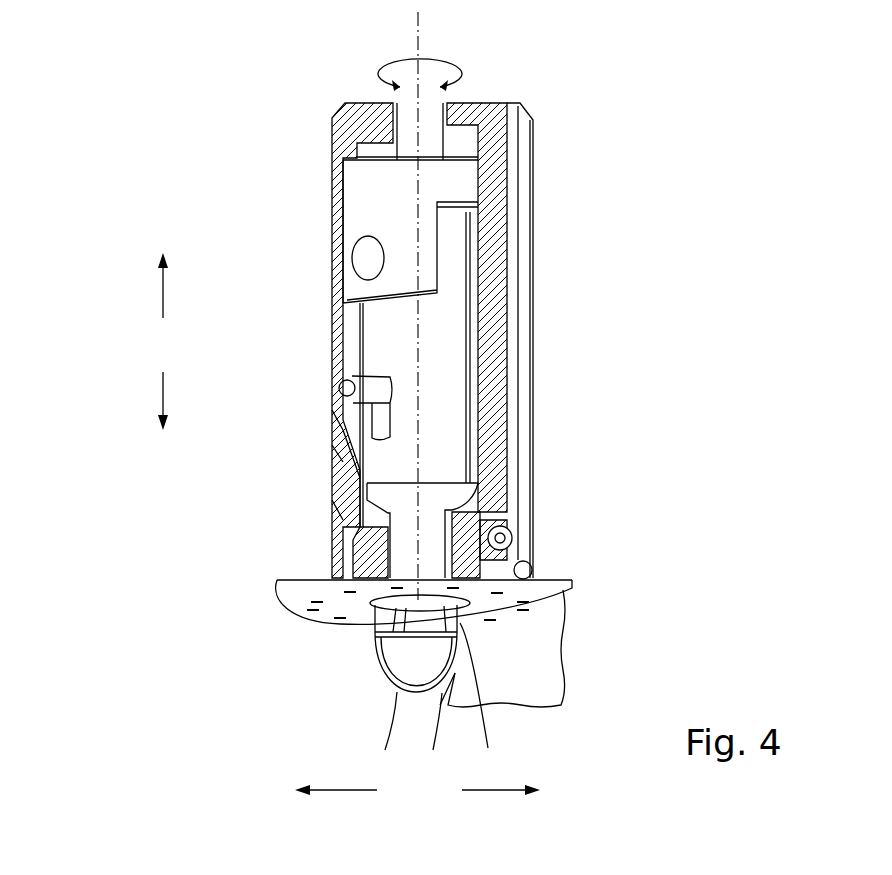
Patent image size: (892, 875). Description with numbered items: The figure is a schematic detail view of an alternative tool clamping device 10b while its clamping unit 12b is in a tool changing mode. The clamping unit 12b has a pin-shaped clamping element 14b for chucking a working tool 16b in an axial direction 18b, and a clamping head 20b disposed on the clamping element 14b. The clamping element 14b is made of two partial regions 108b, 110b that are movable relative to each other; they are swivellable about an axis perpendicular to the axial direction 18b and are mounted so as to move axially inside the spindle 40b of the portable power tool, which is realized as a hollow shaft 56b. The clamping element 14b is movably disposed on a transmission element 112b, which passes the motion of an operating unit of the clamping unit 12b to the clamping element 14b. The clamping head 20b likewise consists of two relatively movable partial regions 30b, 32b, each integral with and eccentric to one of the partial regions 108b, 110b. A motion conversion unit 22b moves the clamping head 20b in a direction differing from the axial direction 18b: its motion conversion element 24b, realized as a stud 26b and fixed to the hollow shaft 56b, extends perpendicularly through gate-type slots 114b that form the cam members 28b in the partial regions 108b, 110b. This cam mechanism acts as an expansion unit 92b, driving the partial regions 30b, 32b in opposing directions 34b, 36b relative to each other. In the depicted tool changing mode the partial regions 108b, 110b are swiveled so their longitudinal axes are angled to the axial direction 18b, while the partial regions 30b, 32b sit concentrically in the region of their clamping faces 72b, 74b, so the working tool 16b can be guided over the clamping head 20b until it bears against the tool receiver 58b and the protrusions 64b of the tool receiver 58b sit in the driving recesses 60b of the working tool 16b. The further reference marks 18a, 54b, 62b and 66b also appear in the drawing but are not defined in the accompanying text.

The tool clamping device 10b is at (605, 62).
The clamping unit 12b is at (238, 633).
The clamping element 14b is at (380, 339).
The working tool 16b is at (578, 584).
The first axial direction 18a is at (163, 293).
The axial direction 18b is at (163, 393).
The clamping head 20b is at (357, 712).
The motion conversion unit 22b is at (305, 452).
The motion conversion element 24b is at (509, 406).
The stud 26b is at (392, 378).
The cam member 28b is at (332, 463).
The partial region of clamping head 30b is at (410, 670).
The partial region of clamping head 32b is at (437, 727).
The opposing direction 34b is at (347, 792).
The opposing direction 36b is at (490, 792).
The spindle 40b is at (497, 190).
The longitudinal axis 54b is at (418, 36).
The hollow shaft 56b is at (480, 226).
The tool receiver 58b is at (530, 558).
The driving recess 60b is at (536, 578).
The rotation direction 62b is at (445, 55).
The protrusion 64b is at (336, 649).
The guide 66b is at (416, 618).
The clamping face 72b is at (376, 650).
The clamping face 74b is at (488, 748).
The expansion unit 92b is at (305, 421).
The partial region of clamping element 108b is at (378, 323).
The partial region of clamping element 110b is at (478, 252).
The transmission element 112b is at (355, 187).
The gate-type slot 114b is at (332, 510).